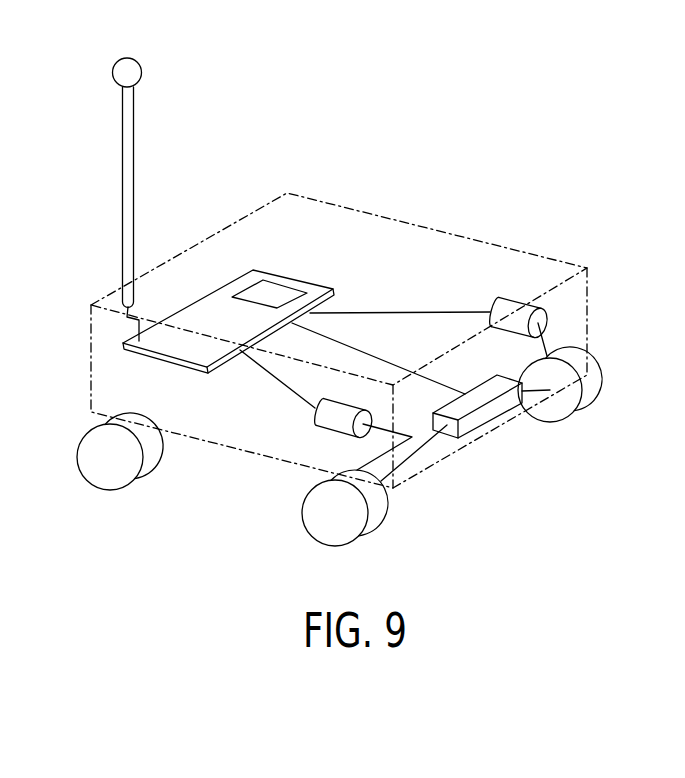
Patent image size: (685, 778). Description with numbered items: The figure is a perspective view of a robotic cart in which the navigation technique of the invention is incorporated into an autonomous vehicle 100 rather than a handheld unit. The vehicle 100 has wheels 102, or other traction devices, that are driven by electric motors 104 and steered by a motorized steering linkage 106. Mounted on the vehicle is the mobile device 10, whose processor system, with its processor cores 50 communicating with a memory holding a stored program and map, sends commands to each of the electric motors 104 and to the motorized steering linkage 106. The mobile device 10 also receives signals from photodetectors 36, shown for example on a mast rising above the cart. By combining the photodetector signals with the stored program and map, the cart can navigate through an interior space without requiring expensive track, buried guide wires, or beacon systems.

The autonomous vehicle 100 is at (410, 100).
The mobile device 10 is at (203, 203).
The processor cores 50 is at (277, 293).
The photodetectors 36 is at (111, 88).
The electric motors 104 is at (503, 298).
The motorized steering linkage 106 is at (491, 421).
The wheels 102 is at (578, 415).